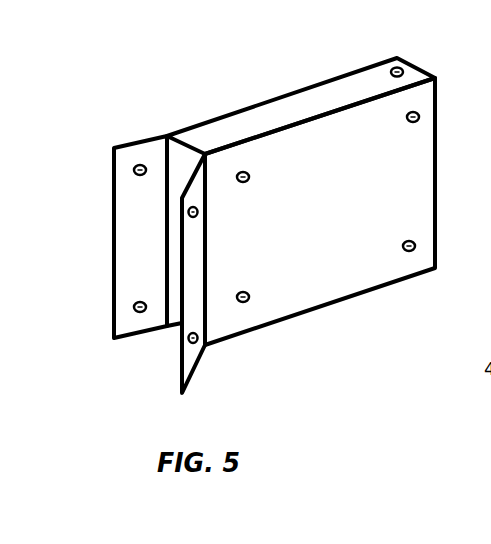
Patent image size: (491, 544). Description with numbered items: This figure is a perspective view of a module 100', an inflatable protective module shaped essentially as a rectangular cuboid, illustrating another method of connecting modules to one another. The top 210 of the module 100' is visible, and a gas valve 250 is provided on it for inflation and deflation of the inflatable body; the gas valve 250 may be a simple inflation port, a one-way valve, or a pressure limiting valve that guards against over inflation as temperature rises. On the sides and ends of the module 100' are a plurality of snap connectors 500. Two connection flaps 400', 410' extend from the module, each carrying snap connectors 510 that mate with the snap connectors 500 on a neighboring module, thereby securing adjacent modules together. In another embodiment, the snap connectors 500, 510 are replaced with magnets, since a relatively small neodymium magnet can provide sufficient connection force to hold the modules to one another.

The module 100' is at (329, 190).
The top 210 is at (337, 90).
The gas valve 250 is at (401, 71).
The snap connectors 500 is at (245, 180).
The snap connectors 510 is at (138, 302).
The connection flap 410' is at (109, 238).
The connection flap 400' is at (247, 275).